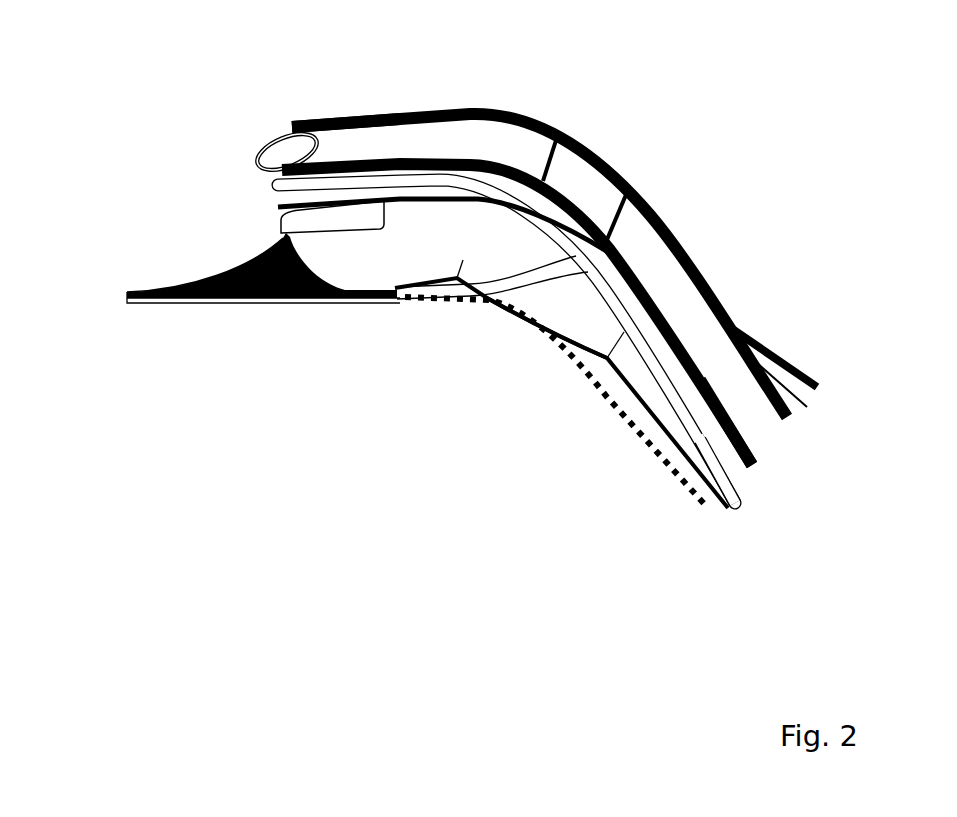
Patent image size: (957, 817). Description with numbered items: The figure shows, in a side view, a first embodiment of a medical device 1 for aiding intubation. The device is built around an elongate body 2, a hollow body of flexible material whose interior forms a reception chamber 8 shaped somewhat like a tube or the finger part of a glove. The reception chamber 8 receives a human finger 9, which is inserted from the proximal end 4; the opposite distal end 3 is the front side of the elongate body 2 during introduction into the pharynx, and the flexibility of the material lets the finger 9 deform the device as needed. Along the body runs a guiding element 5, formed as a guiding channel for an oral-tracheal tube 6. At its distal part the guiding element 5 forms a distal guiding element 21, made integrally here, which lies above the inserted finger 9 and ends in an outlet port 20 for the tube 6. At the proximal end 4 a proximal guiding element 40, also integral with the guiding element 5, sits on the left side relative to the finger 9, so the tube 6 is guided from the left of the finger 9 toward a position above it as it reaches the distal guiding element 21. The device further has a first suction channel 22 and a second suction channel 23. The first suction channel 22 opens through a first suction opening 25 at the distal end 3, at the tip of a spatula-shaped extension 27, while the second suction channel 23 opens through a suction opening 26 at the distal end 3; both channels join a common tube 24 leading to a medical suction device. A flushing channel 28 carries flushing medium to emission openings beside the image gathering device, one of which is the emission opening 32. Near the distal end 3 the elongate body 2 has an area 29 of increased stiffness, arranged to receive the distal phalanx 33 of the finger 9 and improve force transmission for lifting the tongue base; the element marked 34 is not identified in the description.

The medical device 1 is at (414, 471).
The elongate body 2 is at (628, 428).
The distal end 3 is at (222, 146).
The proximal end 4 is at (737, 546).
The guiding element 5 is at (472, 112).
The oral-tracheal tube 6 is at (263, 157).
The reception chamber 8 is at (593, 370).
The human finger 9 is at (552, 328).
The outlet port 20 is at (275, 128).
The distal guiding element 21 is at (300, 118).
The first suction channel 22 is at (278, 303).
The second suction channel 23 is at (477, 180).
The common tube 24 is at (732, 492).
The first suction opening 25 is at (128, 302).
The suction opening 26 is at (277, 192).
The extension 27 is at (193, 281).
The flushing channel 28 is at (793, 364).
The area of increased stiffness 29 is at (457, 312).
The emission opening 32 is at (277, 203).
The distal phalanx 33 is at (395, 286).
The insert 34 is at (384, 213).
The proximal guiding element 40 is at (713, 390).